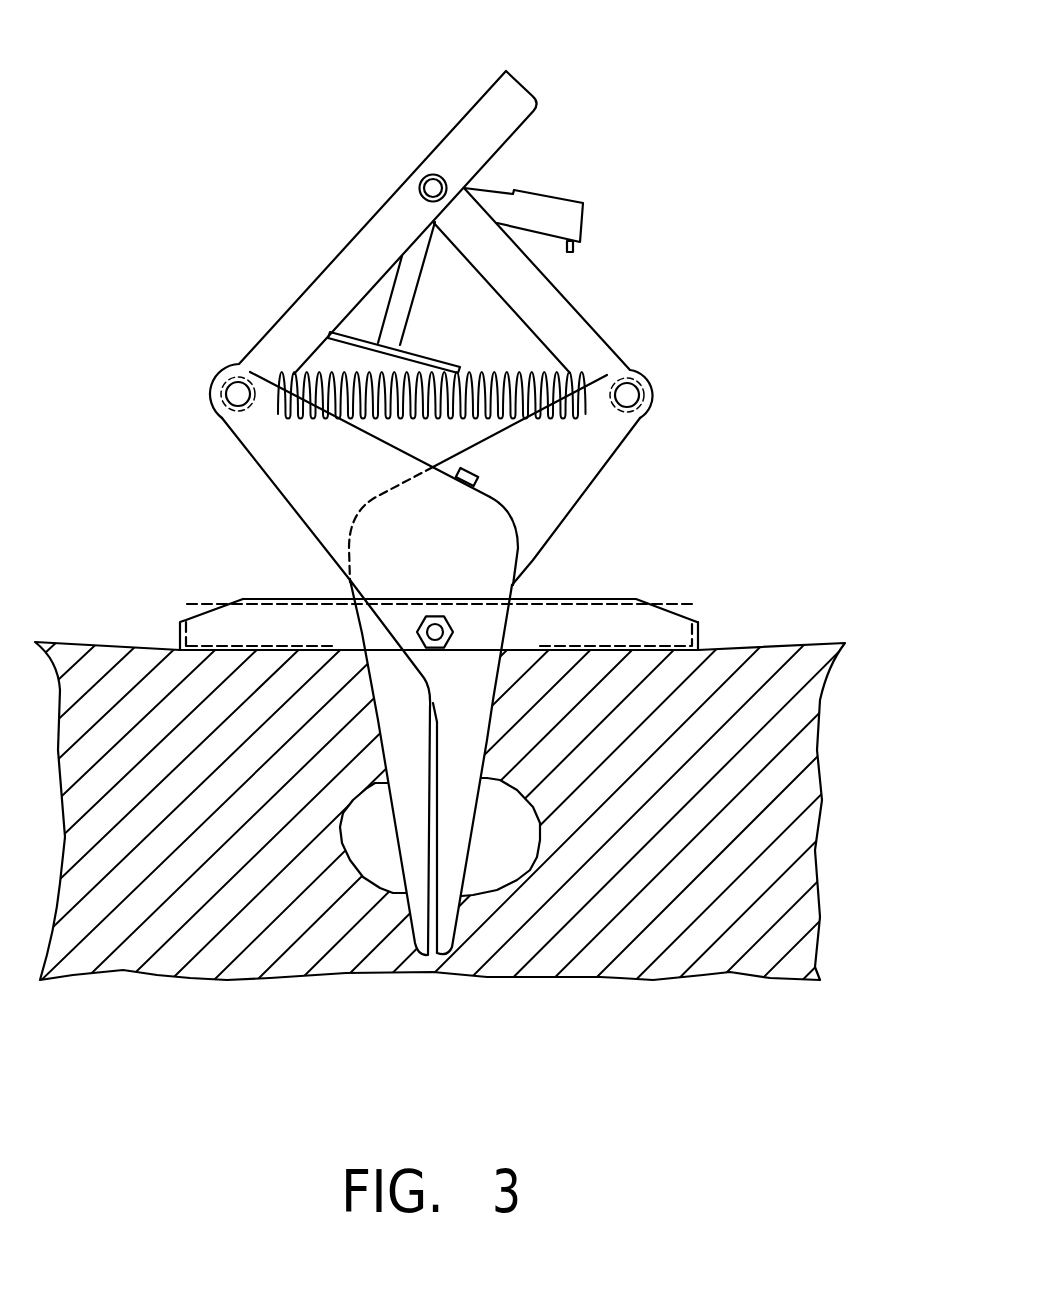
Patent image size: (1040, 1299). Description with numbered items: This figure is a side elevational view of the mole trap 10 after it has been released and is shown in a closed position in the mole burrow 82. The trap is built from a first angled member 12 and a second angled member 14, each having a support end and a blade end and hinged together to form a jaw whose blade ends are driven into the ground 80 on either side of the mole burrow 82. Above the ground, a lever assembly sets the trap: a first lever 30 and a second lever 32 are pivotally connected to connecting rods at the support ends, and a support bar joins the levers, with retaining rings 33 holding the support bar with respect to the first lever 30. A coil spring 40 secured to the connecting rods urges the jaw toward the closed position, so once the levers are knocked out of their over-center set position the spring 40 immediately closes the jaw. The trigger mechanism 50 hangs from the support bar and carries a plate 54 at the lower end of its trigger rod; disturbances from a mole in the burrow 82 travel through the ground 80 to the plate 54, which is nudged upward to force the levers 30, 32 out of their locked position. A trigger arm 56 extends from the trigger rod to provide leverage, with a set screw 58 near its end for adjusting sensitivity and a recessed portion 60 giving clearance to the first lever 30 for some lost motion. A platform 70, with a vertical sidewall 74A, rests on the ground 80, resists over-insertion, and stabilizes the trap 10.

The mole trap 10 is at (133, 58).
The first angled member 12 is at (282, 467).
The second angled member 14 is at (580, 482).
The first lever 30 is at (352, 245).
The second lever 32 is at (570, 310).
The retaining rings 33 is at (421, 189).
The coil spring 40 is at (457, 415).
The trigger mechanism 50 is at (367, 307).
The plate 54 is at (420, 353).
The trigger arm 56 is at (545, 212).
The set screw 58 is at (588, 200).
The recessed portion 60 is at (498, 193).
The platform 70 is at (610, 595).
The vertical sidewall 74A is at (222, 622).
The ground 80 is at (800, 723).
The mole burrow 82 is at (517, 867).